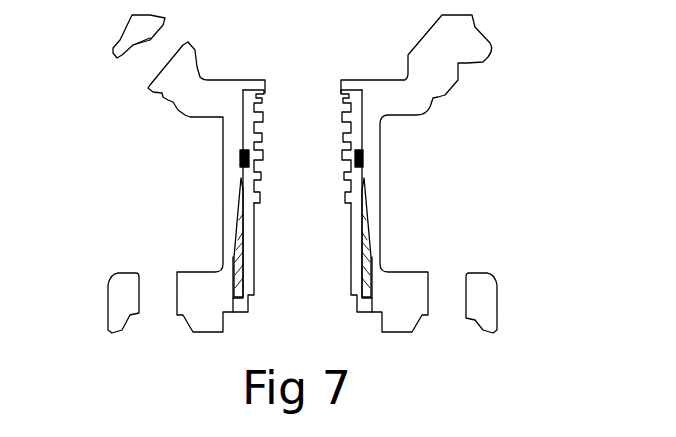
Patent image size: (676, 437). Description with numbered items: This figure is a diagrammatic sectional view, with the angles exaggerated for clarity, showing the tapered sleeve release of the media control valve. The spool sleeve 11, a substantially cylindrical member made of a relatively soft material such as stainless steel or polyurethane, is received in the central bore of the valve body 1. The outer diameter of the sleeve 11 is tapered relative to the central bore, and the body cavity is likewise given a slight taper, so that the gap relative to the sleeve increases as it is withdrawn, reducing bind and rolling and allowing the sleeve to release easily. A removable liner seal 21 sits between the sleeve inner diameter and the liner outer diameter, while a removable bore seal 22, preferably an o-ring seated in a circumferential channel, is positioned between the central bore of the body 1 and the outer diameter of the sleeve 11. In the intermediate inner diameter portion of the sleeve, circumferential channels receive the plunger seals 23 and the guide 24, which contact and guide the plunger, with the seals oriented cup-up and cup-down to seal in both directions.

The valve body 1 is at (408, 288).
The spool sleeve 11 is at (358, 235).
The liner seal 21 is at (337, 149).
The bore seal 22 is at (363, 158).
The plunger seal 23 is at (270, 97).
The guide 24 is at (340, 130).